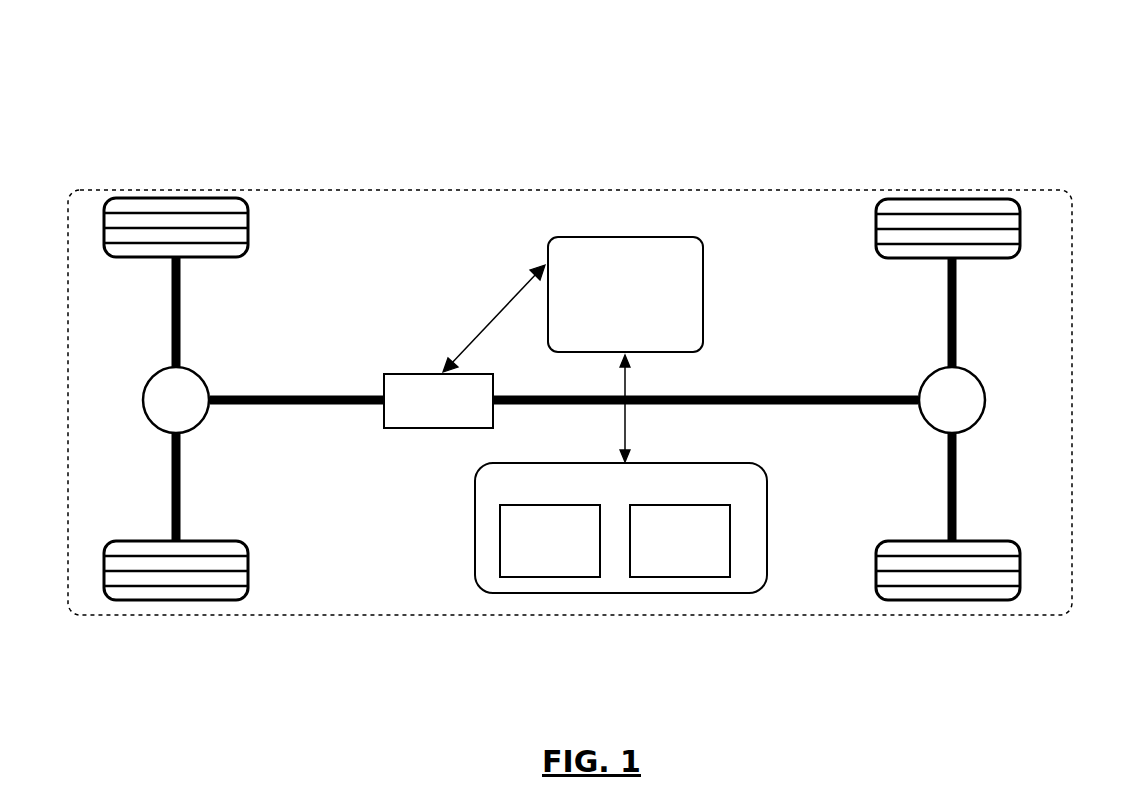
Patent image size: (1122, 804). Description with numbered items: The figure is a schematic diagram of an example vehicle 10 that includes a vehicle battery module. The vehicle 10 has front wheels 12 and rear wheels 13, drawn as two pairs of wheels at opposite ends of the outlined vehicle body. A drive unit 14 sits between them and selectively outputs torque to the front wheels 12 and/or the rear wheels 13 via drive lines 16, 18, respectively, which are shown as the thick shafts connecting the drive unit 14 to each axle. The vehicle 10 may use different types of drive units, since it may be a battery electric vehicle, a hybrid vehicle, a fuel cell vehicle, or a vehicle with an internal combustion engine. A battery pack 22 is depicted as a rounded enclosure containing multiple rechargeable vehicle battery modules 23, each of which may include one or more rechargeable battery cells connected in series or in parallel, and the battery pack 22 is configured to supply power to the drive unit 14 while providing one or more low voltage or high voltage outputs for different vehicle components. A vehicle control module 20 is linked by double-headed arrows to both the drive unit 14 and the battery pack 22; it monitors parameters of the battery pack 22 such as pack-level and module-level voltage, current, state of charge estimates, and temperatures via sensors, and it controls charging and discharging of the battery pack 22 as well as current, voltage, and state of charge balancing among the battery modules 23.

The vehicle 10 is at (1070, 88).
The front wheels 12 is at (930, 199).
The rear wheels 13 is at (150, 198).
The drive unit 14 is at (394, 430).
The drive line 16 is at (920, 412).
The drive line 18 is at (148, 412).
The vehicle control module 20 is at (683, 237).
The battery pack 22 is at (475, 508).
The vehicle battery module 23 is at (730, 535).